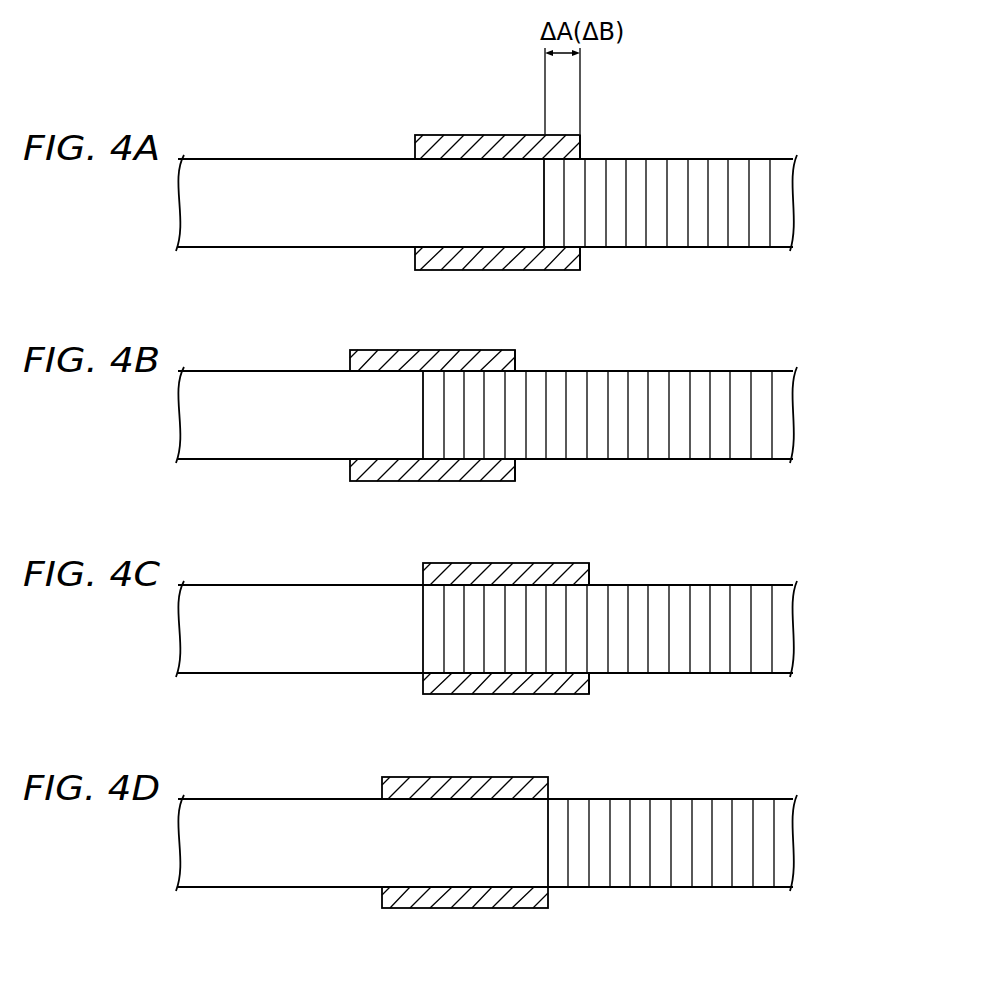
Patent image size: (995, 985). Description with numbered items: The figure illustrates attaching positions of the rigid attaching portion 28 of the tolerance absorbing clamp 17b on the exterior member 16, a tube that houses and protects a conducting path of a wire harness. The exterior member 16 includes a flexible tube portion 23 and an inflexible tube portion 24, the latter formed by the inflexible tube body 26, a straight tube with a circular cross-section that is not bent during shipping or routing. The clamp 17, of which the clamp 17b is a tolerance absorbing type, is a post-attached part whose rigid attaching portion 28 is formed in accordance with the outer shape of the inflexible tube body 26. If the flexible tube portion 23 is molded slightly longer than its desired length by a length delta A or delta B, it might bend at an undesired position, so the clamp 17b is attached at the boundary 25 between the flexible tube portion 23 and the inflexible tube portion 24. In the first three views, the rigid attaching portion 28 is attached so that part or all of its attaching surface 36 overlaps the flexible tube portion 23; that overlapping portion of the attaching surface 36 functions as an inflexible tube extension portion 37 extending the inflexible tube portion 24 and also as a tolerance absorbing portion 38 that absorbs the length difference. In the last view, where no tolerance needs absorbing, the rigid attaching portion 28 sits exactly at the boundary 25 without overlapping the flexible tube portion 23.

In FIG. 4A, the exterior member 16 is at (216, 153).
In FIG. 4B, the exterior member 16 is at (216, 365).
In FIG. 4C, the exterior member 16 is at (216, 579).
In FIG. 4D, the exterior member 16 is at (193, 895).
In FIG. 4A, the clamp 17 is at (514, 186).
In FIG. 4B, the clamp 17 is at (421, 398).
In FIG. 4C, the clamp 17 is at (512, 619).
In FIG. 4D, the clamp 17 is at (443, 832).
In FIG. 4A, the tolerance absorbing clamp 17b is at (418, 134).
In FIG. 4B, the tolerance absorbing clamp 17b is at (355, 349).
In FIG. 4C, the tolerance absorbing clamp 17b is at (430, 562).
In FIG. 4D, the tolerance absorbing clamp 17b is at (388, 776).
In FIG. 4A, the flexible tube portion 23 is at (701, 158).
In FIG. 4B, the flexible tube portion 23 is at (701, 370).
In FIG. 4C, the flexible tube portion 23 is at (701, 584).
In FIG. 4D, the flexible tube portion 23 is at (701, 798).
In FIG. 4A, the inflexible tube portion 24 is at (265, 158).
In FIG. 4B, the inflexible tube portion 24 is at (265, 370).
In FIG. 4C, the inflexible tube portion 24 is at (265, 584).
In FIG. 4D, the inflexible tube portion 24 is at (312, 798).
In FIG. 4A, the boundary 25 is at (543, 200).
In FIG. 4B, the boundary 25 is at (421, 415).
In FIG. 4C, the boundary 25 is at (420, 630).
In FIG. 4D, the boundary 25 is at (546, 840).
In FIG. 4A, the inflexible tube body 26 is at (221, 248).
In FIG. 4B, the inflexible tube body 26 is at (221, 460).
In FIG. 4C, the inflexible tube body 26 is at (221, 674).
In FIG. 4D, the inflexible tube body 26 is at (221, 888).
In FIG. 4A, the rigid attaching portion 28 is at (477, 140).
In FIG. 4B, the rigid attaching portion 28 is at (437, 352).
In FIG. 4C, the rigid attaching portion 28 is at (518, 562).
In FIG. 4D, the rigid attaching portion 28 is at (475, 777).
In FIG. 4A, the attaching surface 36 is at (553, 238).
In FIG. 4B, the attaching surface 36 is at (495, 452).
In FIG. 4C, the attaching surface 36 is at (553, 664).
In FIG. 4D, the attaching surface 36 is at (495, 880).
In FIG. 4A, the inflexible tube extension portion 37 is at (562, 134).
In FIG. 4B, the inflexible tube extension portion 37 is at (485, 349).
In FIG. 4C, the inflexible tube extension portion 37 is at (565, 562).
In FIG. 4A, the tolerance absorbing portion 38 is at (609, 166).
In FIG. 4B, the tolerance absorbing portion 38 is at (509, 387).
In FIG. 4C, the tolerance absorbing portion 38 is at (605, 600).